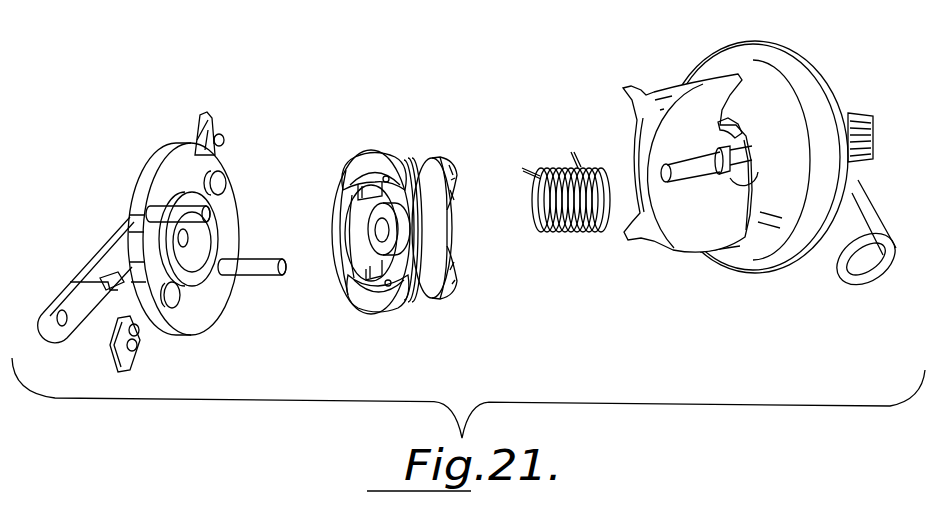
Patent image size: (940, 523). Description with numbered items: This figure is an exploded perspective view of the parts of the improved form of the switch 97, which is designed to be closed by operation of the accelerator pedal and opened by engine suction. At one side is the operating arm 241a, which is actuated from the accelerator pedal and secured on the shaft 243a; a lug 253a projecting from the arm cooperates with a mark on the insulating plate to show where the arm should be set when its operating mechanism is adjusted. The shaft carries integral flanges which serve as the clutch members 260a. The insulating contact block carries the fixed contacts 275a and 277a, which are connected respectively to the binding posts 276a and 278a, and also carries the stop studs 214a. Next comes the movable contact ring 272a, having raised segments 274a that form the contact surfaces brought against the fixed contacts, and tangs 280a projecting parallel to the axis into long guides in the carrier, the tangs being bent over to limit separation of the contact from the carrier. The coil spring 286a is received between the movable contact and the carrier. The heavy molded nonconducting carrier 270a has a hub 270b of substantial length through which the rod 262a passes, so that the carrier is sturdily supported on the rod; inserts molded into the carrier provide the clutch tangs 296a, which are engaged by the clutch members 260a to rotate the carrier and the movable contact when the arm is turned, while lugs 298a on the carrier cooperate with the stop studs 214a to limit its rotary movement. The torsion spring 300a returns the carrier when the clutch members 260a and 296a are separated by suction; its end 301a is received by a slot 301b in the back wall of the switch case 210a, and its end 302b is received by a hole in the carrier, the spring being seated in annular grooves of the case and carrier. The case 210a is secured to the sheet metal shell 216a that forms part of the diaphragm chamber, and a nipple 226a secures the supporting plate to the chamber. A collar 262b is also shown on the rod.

The switch 97 is at (404, 48).
The binding post 276a is at (205, 115).
The raised segment 274a is at (368, 172).
The movable contact ring 272a is at (365, 150).
The tang 280a is at (386, 178).
The spring end 302b is at (522, 165).
The spring end 301a is at (573, 152).
The switch case 210a is at (703, 82).
The sheet metal shell 216a is at (797, 98).
The clutch tang 296a is at (358, 194).
The stop stud 214a is at (186, 212).
The fixed contact 275a is at (224, 182).
The clutch member 260a is at (210, 230).
The hub 270b is at (376, 228).
The shaft 243a is at (190, 240).
The lug 253a is at (130, 250).
The lug 298a is at (445, 190).
The coil spring 286a is at (432, 225).
The operating arm 241a is at (75, 275).
The torsion spring 300a is at (578, 226).
The slot 301b is at (718, 128).
The nipple 226a is at (870, 158).
The fixed contact 277a is at (180, 297).
The contact carrier 270a is at (435, 300).
The rod 262a is at (678, 180).
The collar 262b is at (722, 185).
The binding post 278a is at (120, 345).